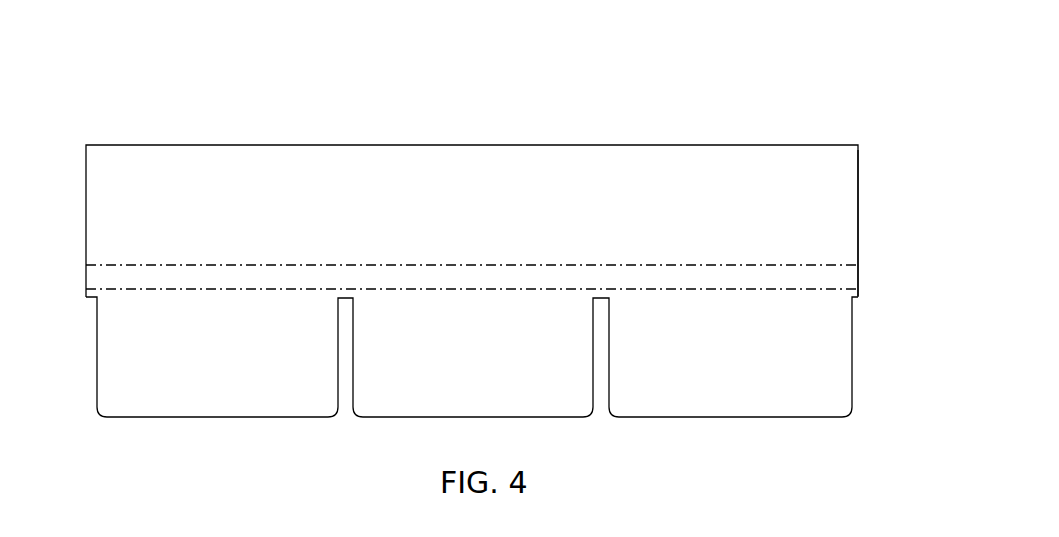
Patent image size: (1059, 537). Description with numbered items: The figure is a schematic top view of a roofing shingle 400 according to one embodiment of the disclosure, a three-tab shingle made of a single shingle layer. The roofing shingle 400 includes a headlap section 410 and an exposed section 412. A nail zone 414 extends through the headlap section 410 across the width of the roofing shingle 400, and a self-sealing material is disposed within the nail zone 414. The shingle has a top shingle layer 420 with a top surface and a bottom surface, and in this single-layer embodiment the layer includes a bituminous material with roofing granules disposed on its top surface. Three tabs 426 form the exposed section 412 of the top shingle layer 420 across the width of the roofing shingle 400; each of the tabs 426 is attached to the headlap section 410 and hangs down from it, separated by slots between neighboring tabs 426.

The roofing shingle 400 is at (824, 93).
The headlap section 410 is at (70, 145).
The exposed section 412 is at (432, 356).
The nail zone 414 is at (884, 279).
The top shingle layer 420 is at (260, 215).
The tabs 426 is at (472, 357).